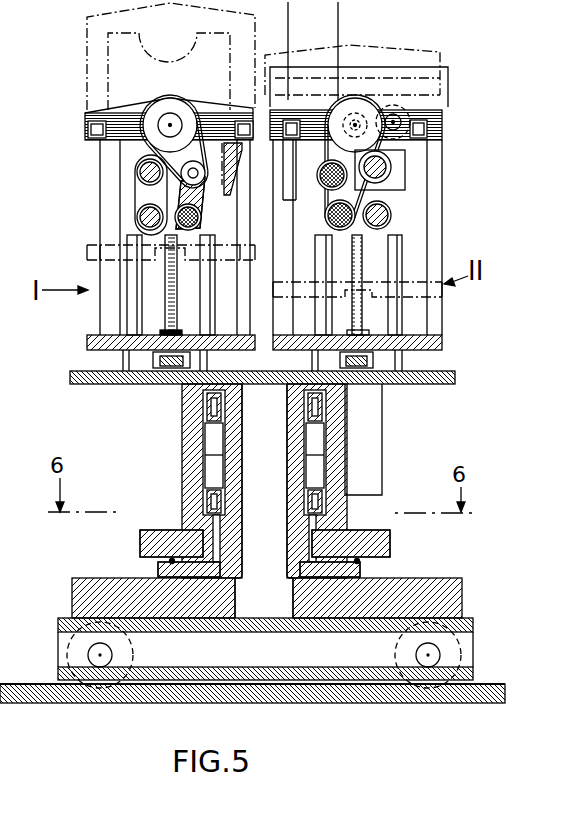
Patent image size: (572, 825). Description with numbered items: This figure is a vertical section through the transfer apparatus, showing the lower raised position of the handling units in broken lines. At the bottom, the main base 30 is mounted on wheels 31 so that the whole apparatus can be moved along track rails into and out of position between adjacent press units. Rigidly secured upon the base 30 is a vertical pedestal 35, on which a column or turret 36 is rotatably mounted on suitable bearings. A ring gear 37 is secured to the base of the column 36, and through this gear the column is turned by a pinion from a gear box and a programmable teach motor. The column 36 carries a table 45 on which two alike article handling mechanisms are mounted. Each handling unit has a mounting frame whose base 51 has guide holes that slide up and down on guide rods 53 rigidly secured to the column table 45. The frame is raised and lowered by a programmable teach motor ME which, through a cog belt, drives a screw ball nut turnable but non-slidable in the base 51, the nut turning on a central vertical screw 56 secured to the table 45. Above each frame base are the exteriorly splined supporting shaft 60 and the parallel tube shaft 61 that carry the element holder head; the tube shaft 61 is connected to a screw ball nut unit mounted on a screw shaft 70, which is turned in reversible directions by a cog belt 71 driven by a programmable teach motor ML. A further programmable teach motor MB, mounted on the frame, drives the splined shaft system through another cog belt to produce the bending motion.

The main base 30 is at (72, 618).
The wheels 31 is at (58, 650).
The vertical pedestal 35 is at (205, 464).
The column or turret 36 is at (182, 437).
The ring gear 37 is at (140, 540).
The table 45 is at (70, 378).
The base of mounting frame 51 is at (87, 342).
The guide rods 53 is at (142, 305).
The central vertical screw 56 is at (172, 330).
The splined supporting rod or shaft 60 is at (326, 219).
The fluid rod, tube, or shaft 61 is at (137, 217).
The screw shaft 70 is at (140, 173).
The cog belt 71 is at (391, 164).
The motor-bend MB is at (380, 42).
The motor-linear ML is at (400, 100).
The motor-elevating ME is at (363, 439).